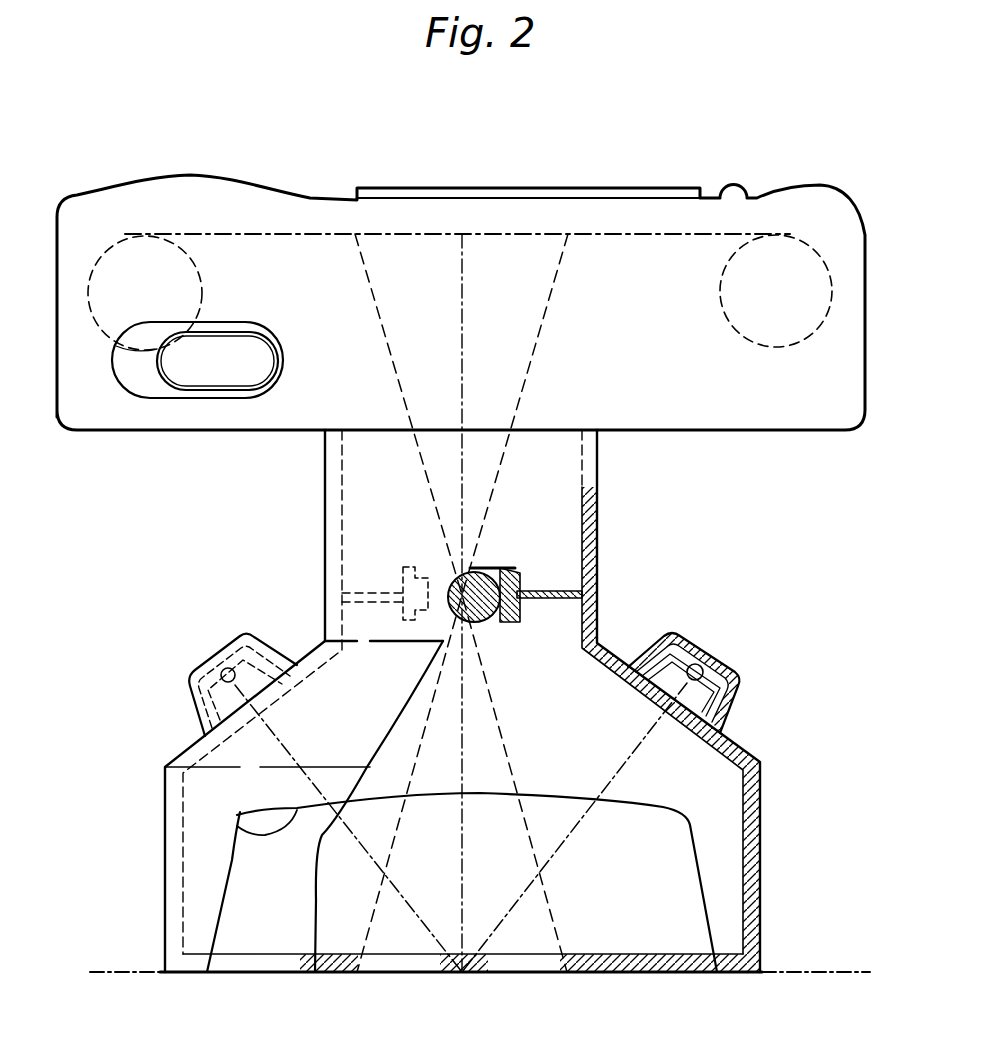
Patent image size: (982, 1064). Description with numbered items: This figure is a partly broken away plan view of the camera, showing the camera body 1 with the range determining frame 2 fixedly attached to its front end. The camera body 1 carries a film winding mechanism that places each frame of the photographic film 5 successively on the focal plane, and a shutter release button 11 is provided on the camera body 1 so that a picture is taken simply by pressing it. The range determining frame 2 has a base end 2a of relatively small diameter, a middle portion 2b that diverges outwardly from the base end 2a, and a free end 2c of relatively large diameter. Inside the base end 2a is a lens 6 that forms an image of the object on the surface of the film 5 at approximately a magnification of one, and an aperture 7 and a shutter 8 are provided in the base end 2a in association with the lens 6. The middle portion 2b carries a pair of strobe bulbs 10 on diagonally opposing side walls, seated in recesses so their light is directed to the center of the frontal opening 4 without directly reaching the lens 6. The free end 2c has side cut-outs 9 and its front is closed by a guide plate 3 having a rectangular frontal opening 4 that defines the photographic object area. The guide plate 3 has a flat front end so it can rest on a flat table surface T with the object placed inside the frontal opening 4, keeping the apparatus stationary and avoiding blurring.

The camera body 1 is at (190, 177).
The range determining frame 2 is at (740, 633).
The base end 2a is at (323, 504).
The middle portion 2b is at (625, 652).
The free end 2c is at (765, 868).
The guide plate 3 is at (643, 972).
The frontal opening 4 is at (573, 953).
The photographic film 5 is at (607, 232).
The lens 6 is at (490, 624).
The aperture 7 is at (465, 565).
The shutter 8 is at (513, 556).
The side cut-outs 9 is at (237, 826).
The strobe bulbs 10 is at (285, 705).
The shutter release button 11 is at (203, 383).
The table surface T is at (800, 968).